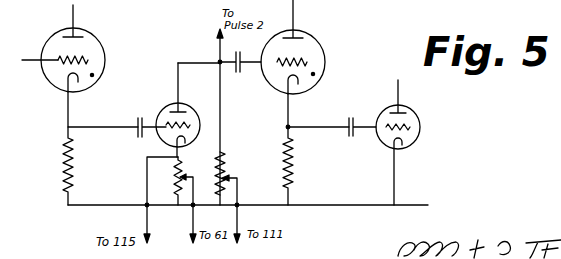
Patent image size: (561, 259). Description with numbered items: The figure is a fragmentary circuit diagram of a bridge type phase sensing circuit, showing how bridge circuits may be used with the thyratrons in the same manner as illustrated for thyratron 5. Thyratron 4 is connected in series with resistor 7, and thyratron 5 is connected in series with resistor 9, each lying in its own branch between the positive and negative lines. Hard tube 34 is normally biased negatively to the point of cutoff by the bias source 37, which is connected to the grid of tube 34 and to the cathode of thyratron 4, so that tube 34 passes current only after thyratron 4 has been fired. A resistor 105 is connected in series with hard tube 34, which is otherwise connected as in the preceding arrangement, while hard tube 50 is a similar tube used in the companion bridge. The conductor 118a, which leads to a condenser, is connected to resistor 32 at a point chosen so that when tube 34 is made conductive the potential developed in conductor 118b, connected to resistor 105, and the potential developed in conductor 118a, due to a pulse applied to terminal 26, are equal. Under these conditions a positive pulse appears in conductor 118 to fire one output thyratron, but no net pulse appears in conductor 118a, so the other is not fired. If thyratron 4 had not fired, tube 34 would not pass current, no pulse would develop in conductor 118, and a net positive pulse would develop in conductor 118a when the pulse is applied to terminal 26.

The thyratron 4 is at (105, 60).
The thyratron 5 is at (322, 52).
The resistor 7 is at (74, 166).
The resistor 9 is at (290, 171).
The terminal 26 is at (218, 61).
The resistor 32 is at (225, 168).
The hard tube 34 is at (166, 104).
The bias source 37 is at (137, 118).
The hard tube 50 is at (386, 114).
The resistor 105 is at (173, 178).
The conductor 118 is at (146, 224).
The conductor 118a is at (240, 202).
The conductor 118b is at (193, 224).